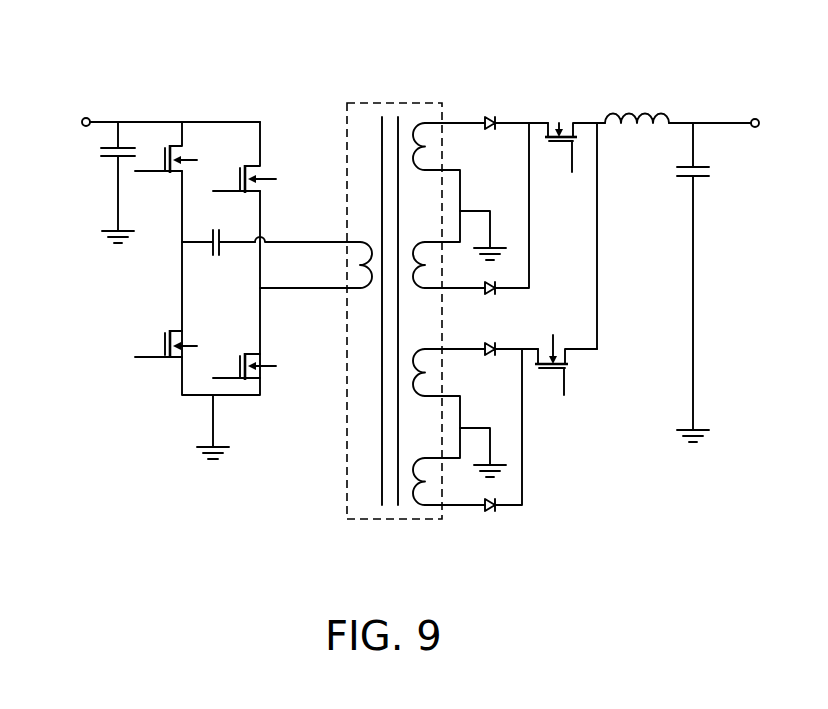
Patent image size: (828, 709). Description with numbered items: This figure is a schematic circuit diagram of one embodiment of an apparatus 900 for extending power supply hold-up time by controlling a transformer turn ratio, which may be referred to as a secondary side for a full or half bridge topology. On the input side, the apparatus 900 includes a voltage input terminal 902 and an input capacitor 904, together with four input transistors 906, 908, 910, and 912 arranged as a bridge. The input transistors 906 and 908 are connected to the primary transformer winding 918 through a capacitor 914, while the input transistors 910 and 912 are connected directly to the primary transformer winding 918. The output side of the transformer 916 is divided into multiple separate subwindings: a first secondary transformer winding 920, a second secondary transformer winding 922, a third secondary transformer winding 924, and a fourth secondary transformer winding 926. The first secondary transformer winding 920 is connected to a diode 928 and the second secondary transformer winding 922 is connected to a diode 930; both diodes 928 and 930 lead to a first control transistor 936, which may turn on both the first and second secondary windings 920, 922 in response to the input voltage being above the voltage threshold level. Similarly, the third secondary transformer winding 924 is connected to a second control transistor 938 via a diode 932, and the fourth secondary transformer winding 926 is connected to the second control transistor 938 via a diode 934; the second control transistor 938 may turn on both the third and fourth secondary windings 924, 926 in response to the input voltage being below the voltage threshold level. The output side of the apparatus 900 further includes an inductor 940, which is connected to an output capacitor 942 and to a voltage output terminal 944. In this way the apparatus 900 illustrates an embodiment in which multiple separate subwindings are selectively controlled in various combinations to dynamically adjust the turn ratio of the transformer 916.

The apparatus 900 is at (71, 61).
The voltage input terminal 902 is at (83, 126).
The input capacitor 904 is at (101, 152).
The input transistor 906 is at (172, 146).
The input transistor 908 is at (165, 358).
The input transistor 910 is at (247, 166).
The input transistor 912 is at (264, 366).
The capacitor 914 is at (218, 257).
The transformer 916 is at (380, 520).
The primary transformer winding 918 is at (360, 240).
The first secondary transformer winding 920 is at (418, 118).
The second secondary transformer winding 922 is at (425, 290).
The third secondary transformer winding 924 is at (425, 396).
The fourth secondary transformer winding 926 is at (427, 507).
The diode 928 is at (487, 119).
The diode 930 is at (497, 291).
The diode 932 is at (488, 352).
The diode 934 is at (491, 508).
The first control transistor 936 is at (560, 111).
The second control transistor 938 is at (567, 369).
The inductor 940 is at (645, 113).
The output capacitor 942 is at (709, 177).
The voltage output terminal 944 is at (755, 127).